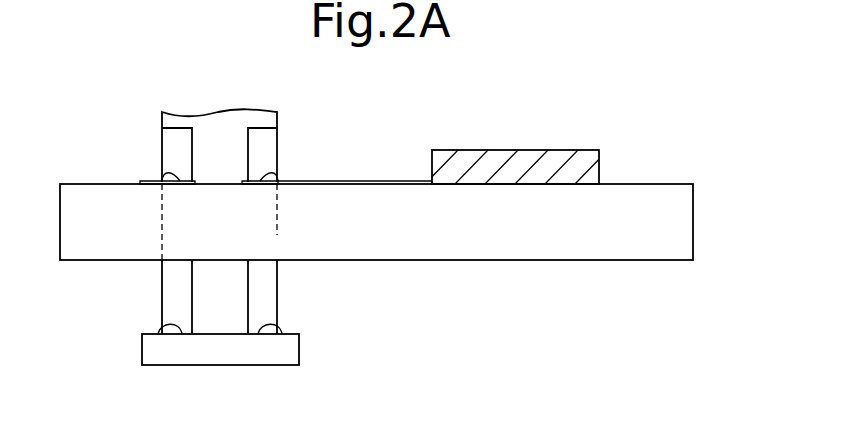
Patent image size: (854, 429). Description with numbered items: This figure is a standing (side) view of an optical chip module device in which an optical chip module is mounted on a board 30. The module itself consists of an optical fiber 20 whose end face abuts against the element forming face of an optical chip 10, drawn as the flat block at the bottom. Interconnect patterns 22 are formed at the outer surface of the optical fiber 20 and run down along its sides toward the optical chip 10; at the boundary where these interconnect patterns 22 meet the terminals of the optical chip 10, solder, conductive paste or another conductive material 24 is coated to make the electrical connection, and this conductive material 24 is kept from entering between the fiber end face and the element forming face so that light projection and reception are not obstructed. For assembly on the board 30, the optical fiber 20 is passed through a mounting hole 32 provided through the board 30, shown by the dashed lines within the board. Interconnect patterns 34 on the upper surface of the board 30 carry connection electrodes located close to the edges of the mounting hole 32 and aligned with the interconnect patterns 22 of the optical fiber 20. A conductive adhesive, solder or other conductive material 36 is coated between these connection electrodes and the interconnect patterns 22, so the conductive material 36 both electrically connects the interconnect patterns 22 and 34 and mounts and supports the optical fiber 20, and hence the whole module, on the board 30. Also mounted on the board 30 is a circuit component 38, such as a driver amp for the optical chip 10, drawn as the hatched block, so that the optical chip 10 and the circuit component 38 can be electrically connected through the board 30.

The optical chip 10 is at (232, 350).
The optical fiber 20 is at (226, 124).
The interconnect patterns 22 is at (177, 282).
The conductive material 24 is at (278, 322).
The board 30 is at (670, 218).
The mounting hole 32 is at (277, 233).
The interconnect patterns 34 is at (354, 180).
The conductive material 36 is at (165, 175).
The circuit component 38 is at (524, 157).